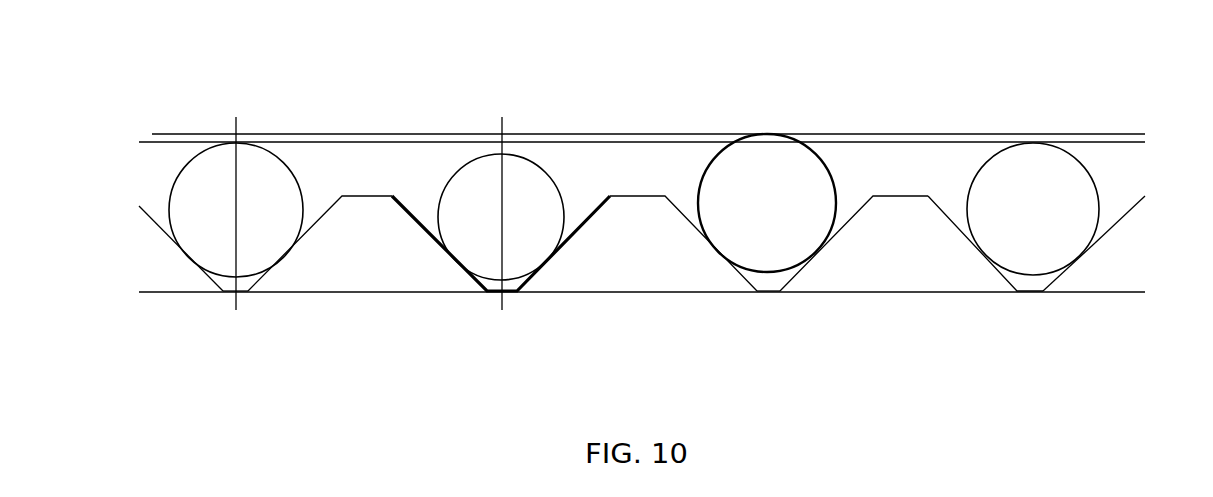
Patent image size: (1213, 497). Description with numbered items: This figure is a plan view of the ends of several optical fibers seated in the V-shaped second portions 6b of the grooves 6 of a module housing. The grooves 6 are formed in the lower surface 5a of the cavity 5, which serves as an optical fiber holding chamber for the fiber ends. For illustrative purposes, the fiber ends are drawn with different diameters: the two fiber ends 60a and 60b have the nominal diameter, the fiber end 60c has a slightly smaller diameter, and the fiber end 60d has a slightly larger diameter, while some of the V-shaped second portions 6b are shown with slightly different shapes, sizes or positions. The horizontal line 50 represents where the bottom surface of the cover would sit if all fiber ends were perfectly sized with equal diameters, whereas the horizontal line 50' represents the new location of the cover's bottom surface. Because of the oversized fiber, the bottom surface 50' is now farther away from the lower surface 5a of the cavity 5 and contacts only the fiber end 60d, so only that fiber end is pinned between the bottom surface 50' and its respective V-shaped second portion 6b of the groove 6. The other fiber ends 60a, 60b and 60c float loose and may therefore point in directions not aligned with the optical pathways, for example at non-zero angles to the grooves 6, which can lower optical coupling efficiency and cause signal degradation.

The cavity 5 is at (138, 195).
The lower surface of the cavity 5a is at (230, 297).
The groove 6 is at (1127, 187).
The second portion of the groove 6b is at (308, 235).
The bottom surface of the cover 50 is at (642, 118).
The new location of the bottom surface of the cover 50' is at (648, 111).
The fiber end 60a is at (250, 163).
The fiber end 60b is at (1033, 168).
The fiber end 60c is at (517, 170).
The fiber end 60d is at (767, 163).